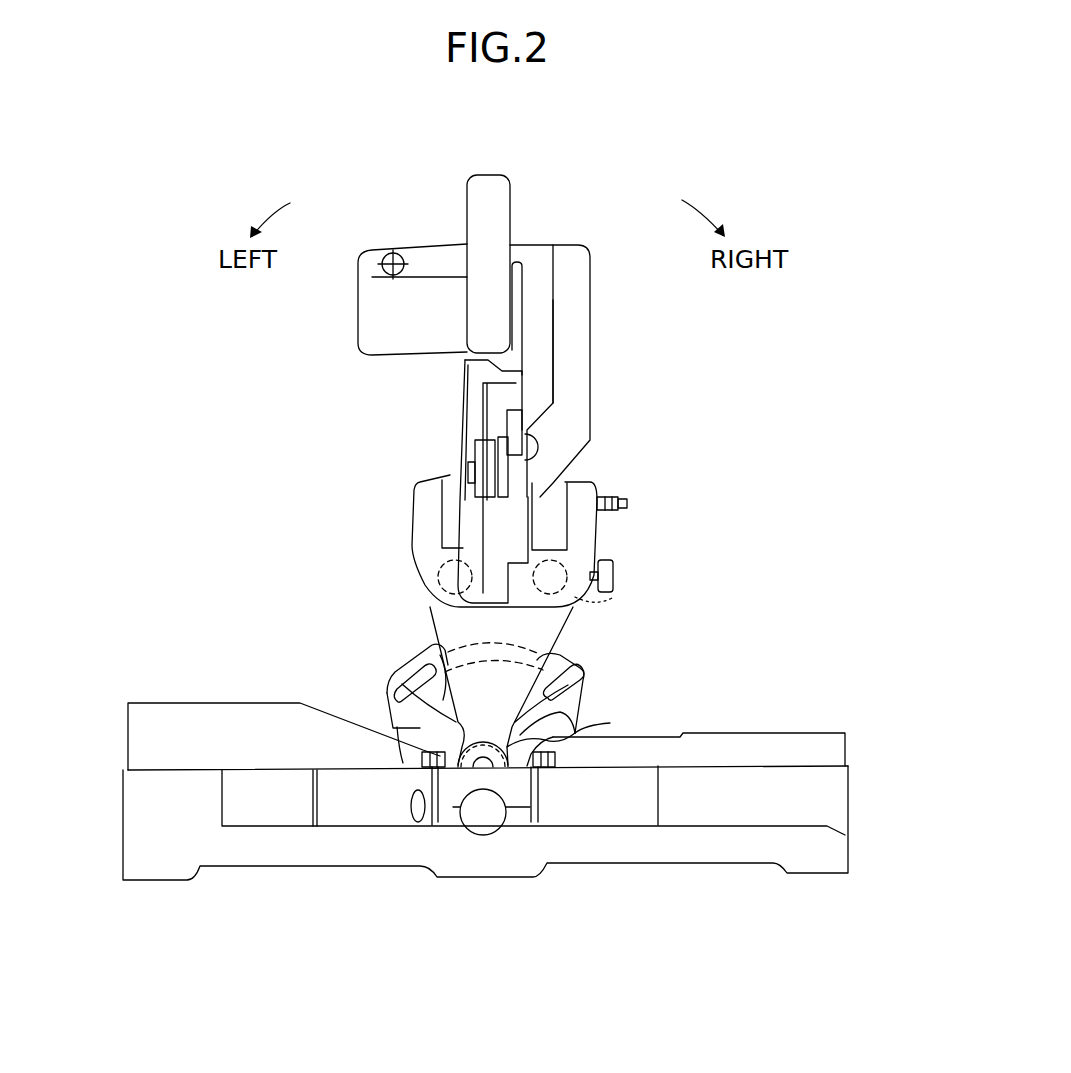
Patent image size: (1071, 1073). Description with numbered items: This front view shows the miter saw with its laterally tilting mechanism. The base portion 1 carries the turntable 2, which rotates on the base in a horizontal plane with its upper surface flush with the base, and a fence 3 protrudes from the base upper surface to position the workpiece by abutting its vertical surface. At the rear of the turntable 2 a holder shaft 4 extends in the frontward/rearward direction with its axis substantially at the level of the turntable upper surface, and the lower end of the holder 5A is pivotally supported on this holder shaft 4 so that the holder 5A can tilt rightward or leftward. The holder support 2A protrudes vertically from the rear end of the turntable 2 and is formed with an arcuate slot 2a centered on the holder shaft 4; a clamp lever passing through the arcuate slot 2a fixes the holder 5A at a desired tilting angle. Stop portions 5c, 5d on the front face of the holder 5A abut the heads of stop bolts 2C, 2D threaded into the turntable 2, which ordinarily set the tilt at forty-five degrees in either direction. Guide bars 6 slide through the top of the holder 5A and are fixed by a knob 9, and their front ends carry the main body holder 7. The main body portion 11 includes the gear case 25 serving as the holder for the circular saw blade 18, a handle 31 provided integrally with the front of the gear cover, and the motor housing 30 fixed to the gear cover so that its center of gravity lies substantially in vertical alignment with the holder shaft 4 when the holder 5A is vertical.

The base portion 1 is at (110, 831).
The turntable 2 is at (345, 783).
The holder support 2A is at (392, 718).
The arcuate slot 2a is at (575, 675).
The stop bolt 2C is at (423, 767).
The stop bolt 2D is at (553, 767).
The fence 3 is at (180, 717).
The holder shaft 4 is at (482, 763).
The holder 5A is at (553, 633).
The stop portion 5c is at (410, 682).
The stop portion 5d is at (580, 710).
The guide bar 6 is at (612, 598).
The main body holder 7 is at (420, 557).
The knob 9 is at (615, 572).
The main body portion 11 is at (556, 233).
The circular saw blade 18 is at (483, 530).
The gear case 25 is at (540, 325).
The motor housing 30 is at (437, 252).
The handle 31 is at (487, 183).